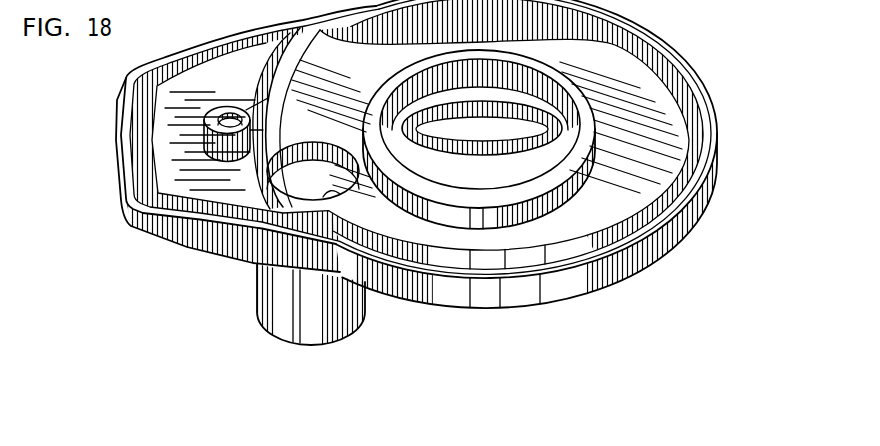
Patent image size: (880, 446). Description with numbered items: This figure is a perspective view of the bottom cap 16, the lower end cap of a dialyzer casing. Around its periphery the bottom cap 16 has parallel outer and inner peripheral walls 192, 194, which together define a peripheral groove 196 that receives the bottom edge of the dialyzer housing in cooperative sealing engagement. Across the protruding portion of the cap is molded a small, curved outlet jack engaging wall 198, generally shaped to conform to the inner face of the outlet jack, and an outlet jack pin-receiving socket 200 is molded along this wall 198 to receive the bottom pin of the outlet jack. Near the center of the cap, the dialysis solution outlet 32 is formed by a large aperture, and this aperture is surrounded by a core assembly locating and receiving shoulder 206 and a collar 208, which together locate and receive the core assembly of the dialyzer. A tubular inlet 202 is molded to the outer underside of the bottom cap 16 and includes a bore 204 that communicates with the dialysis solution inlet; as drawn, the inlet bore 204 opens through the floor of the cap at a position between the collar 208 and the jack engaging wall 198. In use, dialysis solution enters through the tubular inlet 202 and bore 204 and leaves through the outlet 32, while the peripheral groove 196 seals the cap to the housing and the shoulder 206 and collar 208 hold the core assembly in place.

The bottom end cap 16 is at (716, 65).
The dialysis solution outlet 32 is at (513, 151).
The outer peripheral wall 192 is at (714, 118).
The inner peripheral wall 194 is at (701, 146).
The peripheral groove 196 is at (697, 184).
The outlet jack engaging wall 198 is at (284, 103).
The outlet jack pin-receiving socket 200 is at (237, 125).
The tubular inlet 202 is at (257, 294).
The inlet bore 204 is at (333, 196).
The core assembly locating and receiving shoulder 206 is at (582, 127).
The collar 208 is at (572, 157).